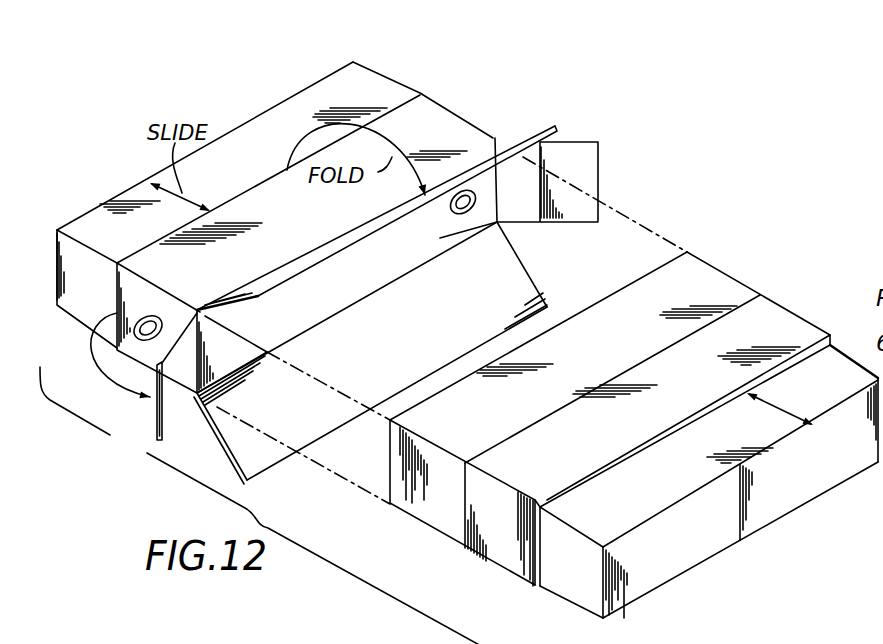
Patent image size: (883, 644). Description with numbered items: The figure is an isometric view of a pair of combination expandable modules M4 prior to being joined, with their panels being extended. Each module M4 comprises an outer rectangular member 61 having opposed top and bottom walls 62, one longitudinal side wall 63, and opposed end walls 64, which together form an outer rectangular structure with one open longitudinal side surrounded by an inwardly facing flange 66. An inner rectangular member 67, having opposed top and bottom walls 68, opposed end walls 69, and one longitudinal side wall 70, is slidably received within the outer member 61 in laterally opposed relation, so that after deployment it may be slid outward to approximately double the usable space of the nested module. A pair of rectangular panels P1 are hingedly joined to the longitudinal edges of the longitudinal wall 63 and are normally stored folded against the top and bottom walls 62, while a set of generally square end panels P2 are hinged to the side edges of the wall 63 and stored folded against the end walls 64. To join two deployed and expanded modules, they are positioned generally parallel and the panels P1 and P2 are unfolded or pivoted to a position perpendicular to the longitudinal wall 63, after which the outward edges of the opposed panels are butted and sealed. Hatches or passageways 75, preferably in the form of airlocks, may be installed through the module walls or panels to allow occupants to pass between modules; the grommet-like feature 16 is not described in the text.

The grommet 16 is at (151, 313).
The outer rectangular member 61 is at (316, 216).
The top and bottom walls 62 is at (147, 367).
The longitudinal side wall 63 is at (383, 271).
The end walls 64 is at (125, 289).
The inwardly facing flange 66 is at (112, 266).
The inner rectangular member 67 is at (107, 202).
The top and bottom walls 68 is at (270, 113).
The end walls 69 is at (88, 320).
The longitudinal side wall 70 is at (144, 178).
The hatches or passageways 75 is at (463, 215).
The combination expandable module M4 is at (264, 181).
The rectangular panels P1 is at (407, 341).
The end panels P2 is at (152, 438).